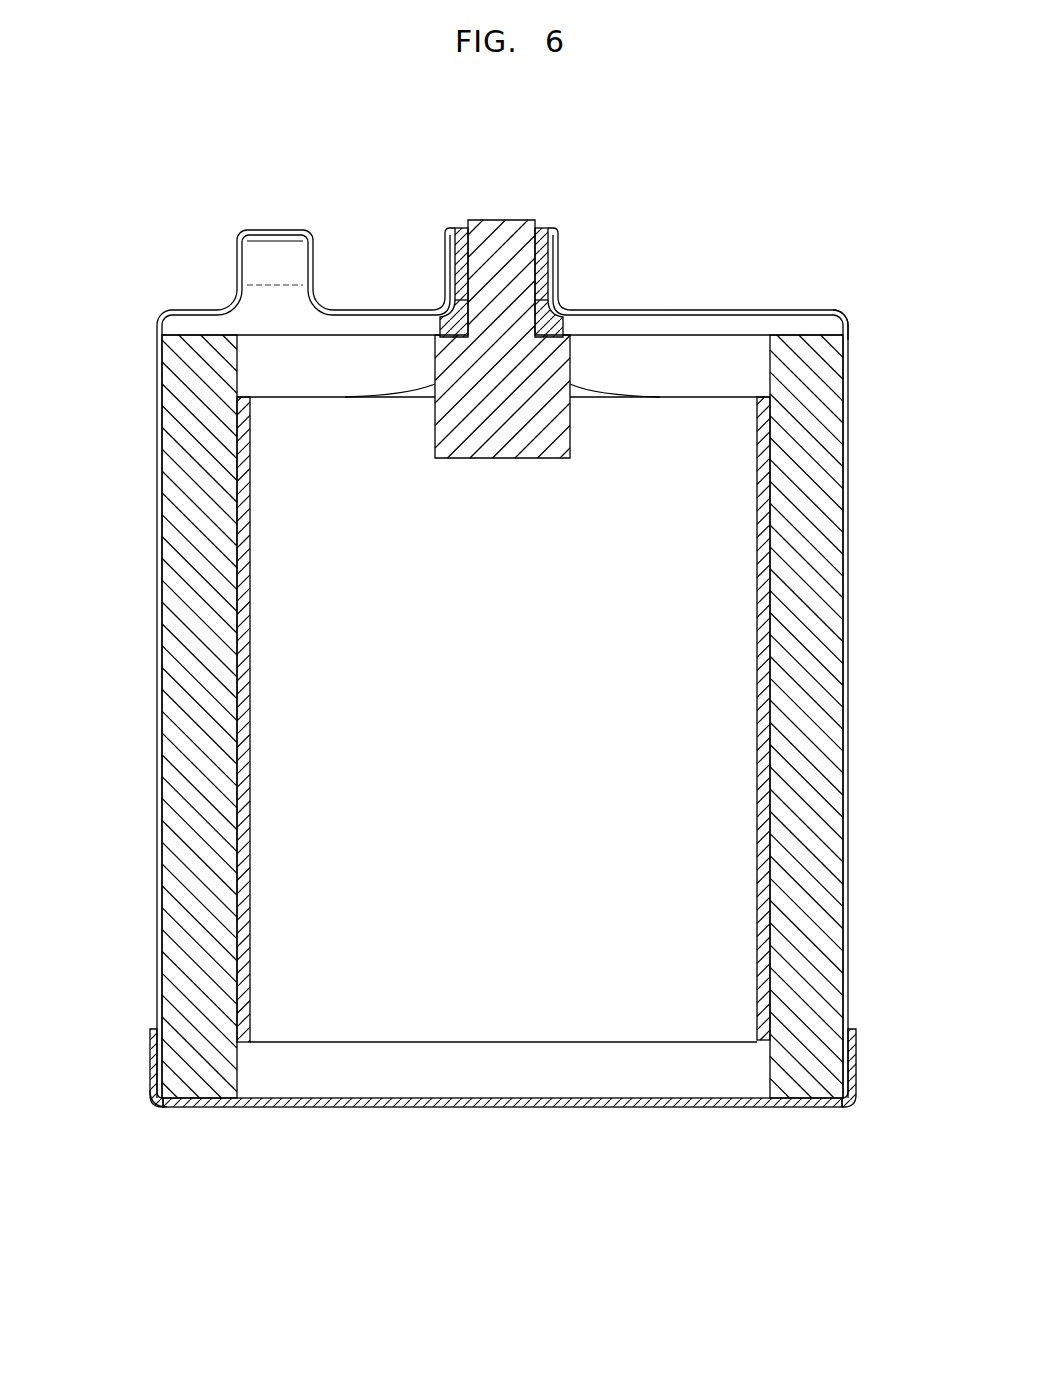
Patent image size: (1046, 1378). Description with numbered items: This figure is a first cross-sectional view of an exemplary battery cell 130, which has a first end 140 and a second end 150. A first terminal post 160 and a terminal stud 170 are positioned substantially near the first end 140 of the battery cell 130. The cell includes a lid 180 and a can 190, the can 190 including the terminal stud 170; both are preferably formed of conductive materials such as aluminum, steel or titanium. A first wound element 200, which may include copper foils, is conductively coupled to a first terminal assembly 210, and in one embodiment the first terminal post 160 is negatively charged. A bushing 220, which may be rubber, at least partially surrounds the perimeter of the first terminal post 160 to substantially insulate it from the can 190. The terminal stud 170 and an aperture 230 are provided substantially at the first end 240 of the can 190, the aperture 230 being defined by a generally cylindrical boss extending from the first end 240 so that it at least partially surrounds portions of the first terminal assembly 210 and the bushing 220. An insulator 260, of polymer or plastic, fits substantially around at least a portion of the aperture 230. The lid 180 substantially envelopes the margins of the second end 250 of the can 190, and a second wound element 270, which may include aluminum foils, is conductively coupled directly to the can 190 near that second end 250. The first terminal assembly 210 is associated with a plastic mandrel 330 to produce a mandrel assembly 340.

The battery cell 130 is at (121, 240).
The first end 140 is at (147, 316).
The second end 150 is at (126, 1067).
The first terminal post 160 is at (503, 220).
The terminal stud 170 is at (270, 228).
The lid 180 is at (700, 1110).
The can 190 is at (795, 311).
The first wound element 200 is at (697, 365).
The first terminal assembly 210 is at (580, 353).
The bushing 220 is at (560, 248).
The aperture 230 is at (565, 292).
The first end 240 is at (868, 303).
The second end 250 is at (146, 1084).
The insulator 260 is at (540, 228).
The second wound element 270 is at (502, 1068).
The mandrel 330 is at (765, 520).
The mandrel assembly 340 is at (785, 645).